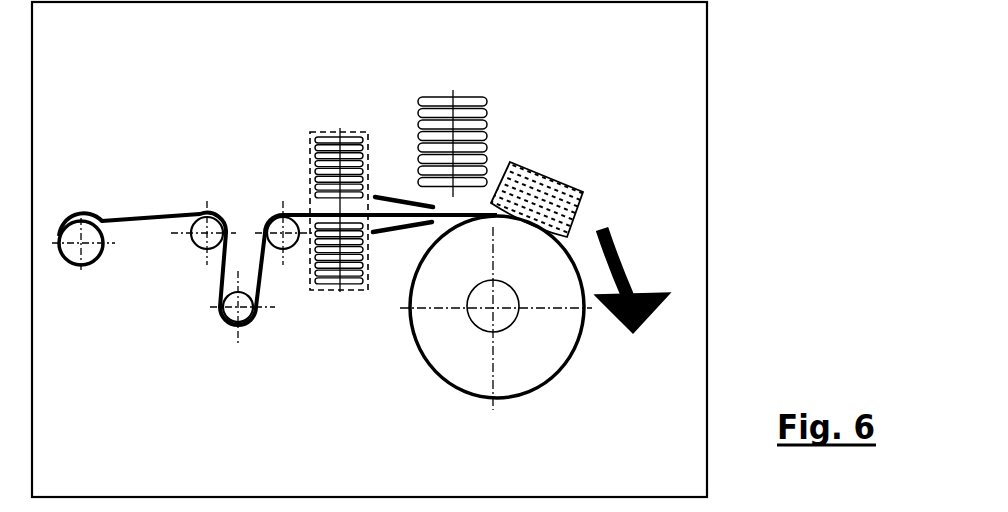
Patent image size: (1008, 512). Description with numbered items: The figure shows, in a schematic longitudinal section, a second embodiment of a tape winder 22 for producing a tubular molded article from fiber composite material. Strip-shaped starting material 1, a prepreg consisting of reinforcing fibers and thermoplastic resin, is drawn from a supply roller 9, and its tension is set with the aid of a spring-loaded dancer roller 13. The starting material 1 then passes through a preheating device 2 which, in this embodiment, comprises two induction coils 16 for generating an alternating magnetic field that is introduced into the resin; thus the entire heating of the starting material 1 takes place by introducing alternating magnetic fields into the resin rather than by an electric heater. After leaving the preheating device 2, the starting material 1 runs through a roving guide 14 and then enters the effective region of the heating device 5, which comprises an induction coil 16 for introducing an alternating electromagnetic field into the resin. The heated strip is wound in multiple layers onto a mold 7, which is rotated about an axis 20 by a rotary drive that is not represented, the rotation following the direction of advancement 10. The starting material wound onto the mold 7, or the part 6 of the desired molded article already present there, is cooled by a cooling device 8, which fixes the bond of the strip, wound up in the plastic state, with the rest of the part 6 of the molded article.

The starting material 1 is at (128, 208).
The preheating device 2 is at (318, 191).
The heating device 5 is at (460, 100).
The part of the molded article to be produced 6 is at (520, 349).
The mold 7 is at (520, 335).
The cooling device 8 is at (547, 193).
The supply roller 9 is at (67, 217).
The direction of advancement 10 is at (630, 259).
The dancer roller 13 is at (254, 314).
The roving guide 14 is at (395, 200).
The induction coil 16 is at (325, 170).
The axis 20 is at (497, 311).
The tape winder 22 is at (524, 128).